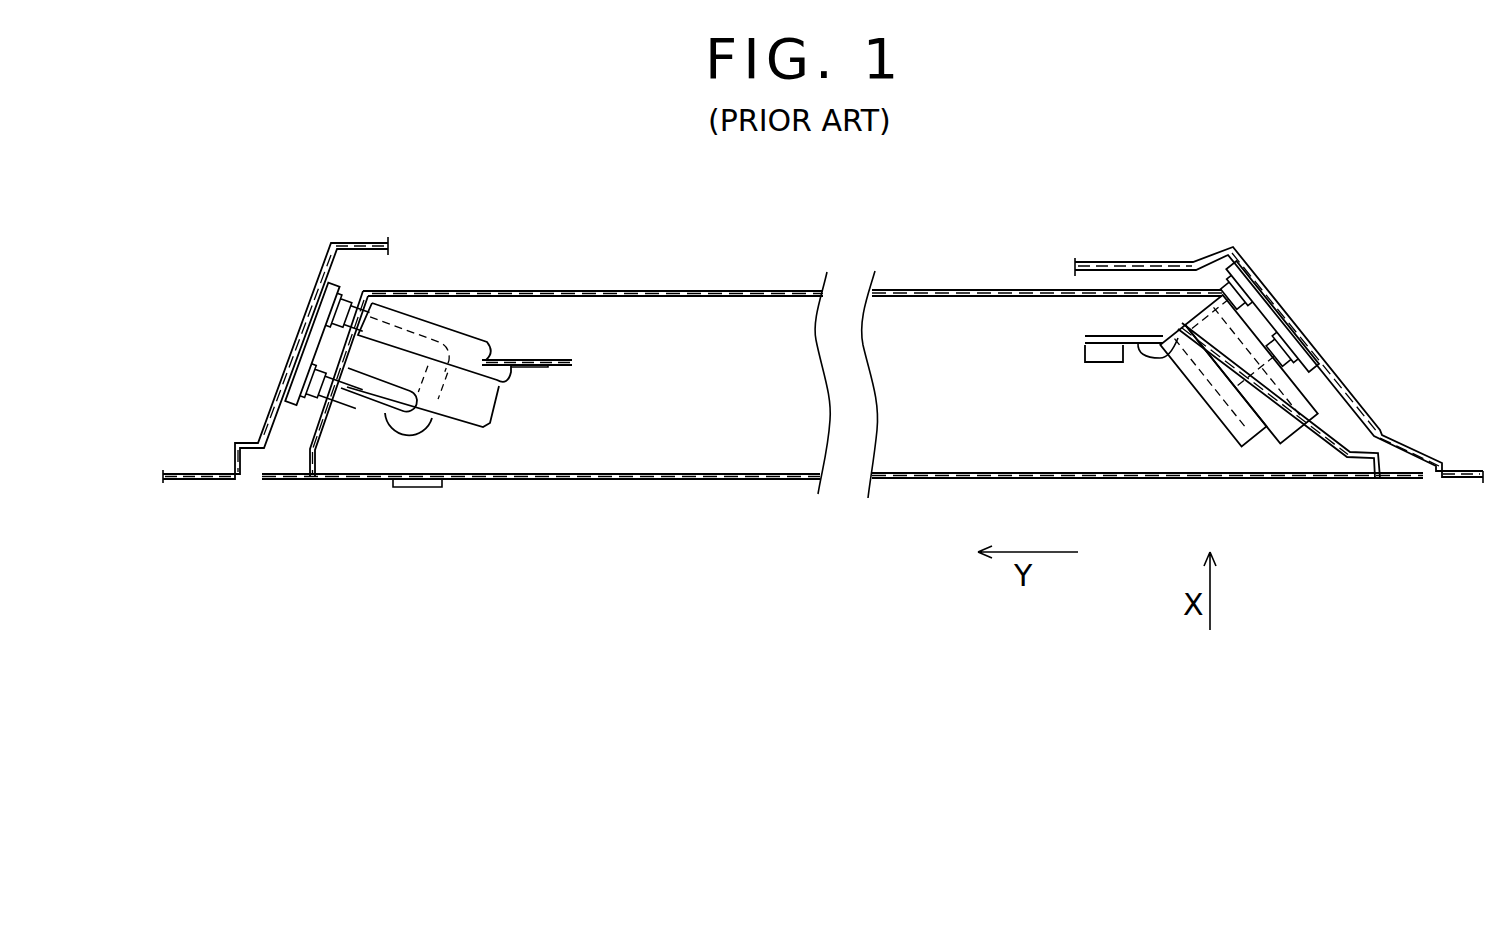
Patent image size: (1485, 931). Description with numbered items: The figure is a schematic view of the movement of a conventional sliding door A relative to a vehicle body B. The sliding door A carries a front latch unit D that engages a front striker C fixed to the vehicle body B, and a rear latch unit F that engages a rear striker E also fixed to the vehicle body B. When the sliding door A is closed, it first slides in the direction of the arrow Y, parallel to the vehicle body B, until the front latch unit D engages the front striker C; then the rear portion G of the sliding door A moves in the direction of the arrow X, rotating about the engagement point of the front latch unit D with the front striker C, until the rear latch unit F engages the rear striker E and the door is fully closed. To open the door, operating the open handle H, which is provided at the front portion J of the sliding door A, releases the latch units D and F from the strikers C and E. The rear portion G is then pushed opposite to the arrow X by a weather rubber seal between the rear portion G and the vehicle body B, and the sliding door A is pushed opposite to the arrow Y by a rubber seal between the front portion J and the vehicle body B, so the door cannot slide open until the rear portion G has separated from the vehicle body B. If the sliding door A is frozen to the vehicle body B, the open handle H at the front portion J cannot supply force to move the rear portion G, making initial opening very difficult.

The sliding door A is at (633, 482).
The vehicle body B is at (203, 482).
The front striker C is at (385, 420).
The front latch unit D is at (458, 430).
The rear striker E is at (1267, 305).
The rear latch unit F is at (1223, 408).
The rear portion G is at (1342, 479).
The open handle H is at (417, 488).
The front portion J is at (313, 482).